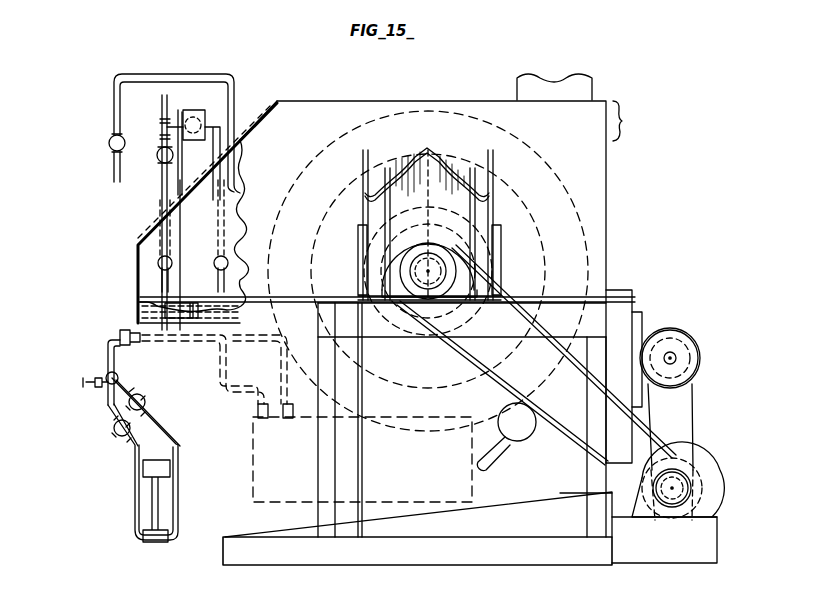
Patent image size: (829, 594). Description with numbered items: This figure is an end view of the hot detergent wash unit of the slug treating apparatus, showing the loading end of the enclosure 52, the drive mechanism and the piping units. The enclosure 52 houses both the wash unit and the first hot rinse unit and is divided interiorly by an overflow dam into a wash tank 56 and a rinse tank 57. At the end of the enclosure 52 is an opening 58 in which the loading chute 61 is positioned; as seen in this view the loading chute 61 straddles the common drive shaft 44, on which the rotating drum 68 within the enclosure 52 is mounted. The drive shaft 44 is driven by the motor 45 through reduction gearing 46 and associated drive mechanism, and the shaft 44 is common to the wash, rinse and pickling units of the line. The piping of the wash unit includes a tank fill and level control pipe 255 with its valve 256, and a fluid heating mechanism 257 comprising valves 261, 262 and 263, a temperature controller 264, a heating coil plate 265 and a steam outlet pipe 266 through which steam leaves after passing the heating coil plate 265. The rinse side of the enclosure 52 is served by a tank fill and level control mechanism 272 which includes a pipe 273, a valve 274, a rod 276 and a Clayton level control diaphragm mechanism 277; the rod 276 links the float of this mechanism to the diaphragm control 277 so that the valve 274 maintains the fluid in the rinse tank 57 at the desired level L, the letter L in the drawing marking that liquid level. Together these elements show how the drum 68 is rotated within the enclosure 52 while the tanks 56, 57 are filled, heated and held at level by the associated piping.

The common drive shaft 44 is at (387, 390).
The motor 45 is at (702, 360).
The reduction gearing 46 is at (707, 463).
The enclosure 52 is at (460, 268).
The wash tank 56 is at (242, 513).
The rinse tank 57 is at (135, 312).
The opening 58 is at (496, 222).
The loading chute 61 is at (434, 151).
The rotating drum 68 is at (546, 166).
The tank fill and level control pipe 255 is at (238, 79).
The valve 256 is at (108, 142).
The fluid heating mechanism 257 is at (103, 515).
The valve 261 is at (146, 399).
The valve 262 is at (80, 382).
The valve 263 is at (132, 430).
The temperature controller 264 is at (163, 467).
The heating coil plate 265 is at (252, 437).
The steam outlet pipe 266 is at (255, 338).
The tank fill and level control mechanism 272 is at (136, 188).
The pipe 273 is at (158, 266).
The valve 274 is at (156, 156).
The rod 276 is at (183, 246).
The Clayton level control diaphragm mechanism 277 is at (193, 110).
The liquid level L is at (232, 292).